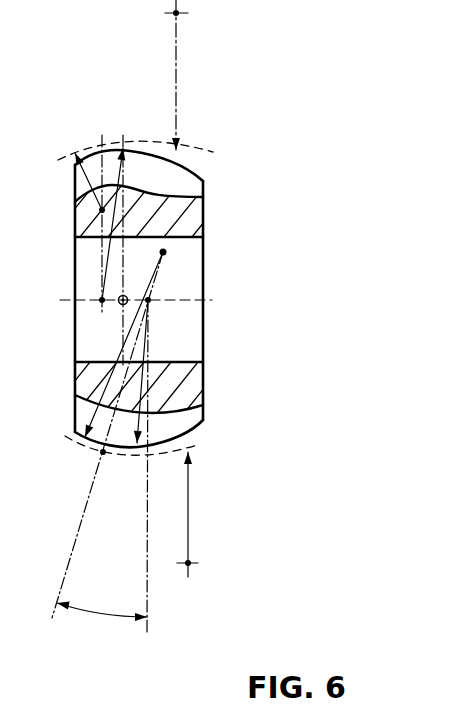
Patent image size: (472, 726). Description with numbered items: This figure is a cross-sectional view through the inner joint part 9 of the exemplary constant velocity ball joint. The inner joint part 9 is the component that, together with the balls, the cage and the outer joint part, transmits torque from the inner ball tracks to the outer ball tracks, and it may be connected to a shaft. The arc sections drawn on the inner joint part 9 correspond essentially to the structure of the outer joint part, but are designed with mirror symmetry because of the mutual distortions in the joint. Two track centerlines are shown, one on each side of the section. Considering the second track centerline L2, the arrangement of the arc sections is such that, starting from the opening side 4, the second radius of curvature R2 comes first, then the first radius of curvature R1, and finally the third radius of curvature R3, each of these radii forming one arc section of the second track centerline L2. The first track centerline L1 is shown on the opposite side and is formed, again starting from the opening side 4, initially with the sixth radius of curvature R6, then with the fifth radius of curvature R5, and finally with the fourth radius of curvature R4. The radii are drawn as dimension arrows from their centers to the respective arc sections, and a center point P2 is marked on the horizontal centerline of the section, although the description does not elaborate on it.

The opening side 4 is at (75, 214).
The inner joint part 9 is at (195, 375).
The first radius of curvature R1 is at (146, 354).
The second radius of curvature R2 is at (103, 388).
The third radius of curvature R3 is at (188, 480).
The fourth radius of curvature R4 is at (178, 97).
The fifth radius of curvature R5 is at (150, 152).
The sixth radius of curvature R6 is at (75, 196).
The first track centerline L1 is at (210, 151).
The second track centerline L2 is at (214, 447).
The center point P2 is at (118, 302).